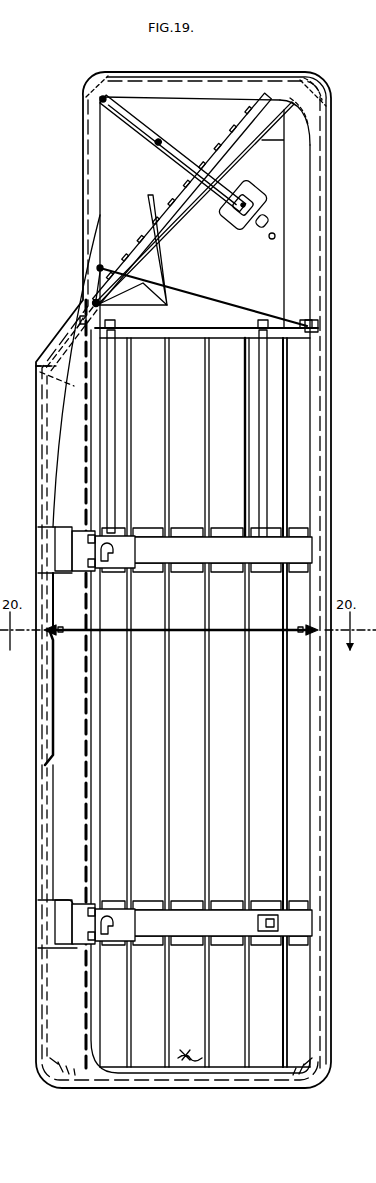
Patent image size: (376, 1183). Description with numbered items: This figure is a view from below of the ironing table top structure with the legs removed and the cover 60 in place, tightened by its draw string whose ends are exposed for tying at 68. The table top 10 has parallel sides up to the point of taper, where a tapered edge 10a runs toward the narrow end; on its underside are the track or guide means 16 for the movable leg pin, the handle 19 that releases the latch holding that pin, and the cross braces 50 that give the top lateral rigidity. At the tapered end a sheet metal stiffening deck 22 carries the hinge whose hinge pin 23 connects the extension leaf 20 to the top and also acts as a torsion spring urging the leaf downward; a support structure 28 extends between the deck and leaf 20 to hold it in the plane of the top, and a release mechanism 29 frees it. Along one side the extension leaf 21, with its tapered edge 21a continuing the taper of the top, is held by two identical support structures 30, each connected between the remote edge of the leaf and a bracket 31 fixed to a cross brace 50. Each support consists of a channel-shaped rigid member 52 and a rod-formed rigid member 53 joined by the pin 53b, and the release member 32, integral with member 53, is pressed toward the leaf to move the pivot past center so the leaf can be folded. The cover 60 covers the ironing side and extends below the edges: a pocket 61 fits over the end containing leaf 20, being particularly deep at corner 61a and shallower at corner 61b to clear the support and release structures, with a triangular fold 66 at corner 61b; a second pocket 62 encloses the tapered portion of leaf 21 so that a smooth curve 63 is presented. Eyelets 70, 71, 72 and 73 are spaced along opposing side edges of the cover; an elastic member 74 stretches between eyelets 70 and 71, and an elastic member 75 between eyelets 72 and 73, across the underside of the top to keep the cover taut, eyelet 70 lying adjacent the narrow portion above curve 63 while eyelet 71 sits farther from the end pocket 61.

The table top 10 is at (310, 716).
The tapered edge 10a is at (160, 220).
The track or guide means 16 is at (113, 420).
The handle 19 is at (289, 410).
The extension leaf 20 is at (200, 110).
The extension leaf 21 is at (65, 810).
The tapered edge 21a is at (63, 322).
The stiffening deck 22 is at (274, 273).
The hinge pin 23 is at (90, 298).
The support structure 28 is at (200, 160).
The release mechanism 29 is at (126, 122).
The support structure 30 is at (68, 522).
The bracket 31 is at (128, 540).
The release member 32 is at (57, 681).
The cross brace 50 is at (218, 545).
The rigid member 52 is at (81, 572).
The rigid member 53 is at (57, 724).
The pin 53b is at (72, 534).
The cover 60 is at (334, 155).
The pocket 61 is at (260, 92).
The corner 61a is at (310, 102).
The corner 61b is at (92, 100).
The second pocket 62 is at (36, 365).
The smooth contour or curve 63 is at (50, 326).
The triangular fold 66 is at (104, 96).
The draw string tying ends 68 is at (186, 1056).
The eyelet 70 is at (103, 266).
The eyelet 71 is at (318, 331).
The eyelet 72 is at (61, 626).
The eyelet 73 is at (310, 627).
The elastic member 74 is at (206, 300).
The elastic member 75 is at (183, 628).